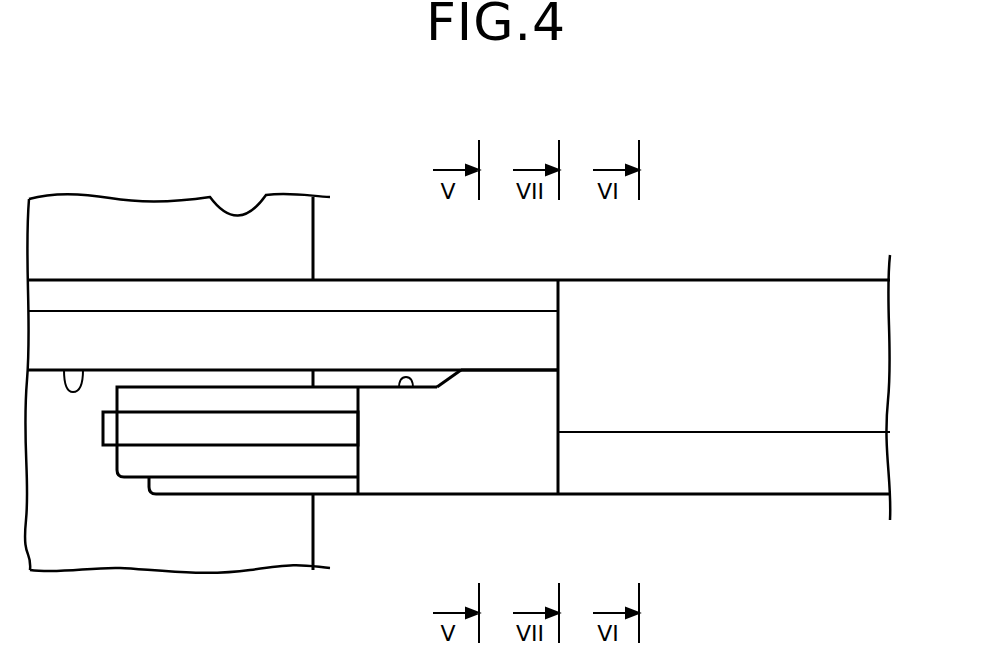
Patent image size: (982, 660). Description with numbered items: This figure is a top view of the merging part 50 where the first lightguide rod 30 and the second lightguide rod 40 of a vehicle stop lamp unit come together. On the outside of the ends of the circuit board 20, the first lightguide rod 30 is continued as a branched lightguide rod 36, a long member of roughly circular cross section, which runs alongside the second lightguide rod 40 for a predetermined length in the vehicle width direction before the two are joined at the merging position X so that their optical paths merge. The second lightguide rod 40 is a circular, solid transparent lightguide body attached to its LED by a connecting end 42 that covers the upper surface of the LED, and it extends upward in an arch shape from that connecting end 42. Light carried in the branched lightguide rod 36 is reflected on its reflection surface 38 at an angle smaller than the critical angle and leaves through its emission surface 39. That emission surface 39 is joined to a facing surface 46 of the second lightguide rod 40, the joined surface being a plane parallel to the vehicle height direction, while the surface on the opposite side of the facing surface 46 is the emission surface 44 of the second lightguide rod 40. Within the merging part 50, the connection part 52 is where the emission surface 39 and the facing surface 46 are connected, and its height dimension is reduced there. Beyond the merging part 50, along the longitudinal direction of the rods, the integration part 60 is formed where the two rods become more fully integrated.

The circuit board 20 is at (63, 540).
The first lightguide rod 30 is at (459, 236).
The branched lightguide rod 36 is at (138, 327).
The reflection surface 38 is at (280, 280).
The emission surface 39 is at (64, 375).
The second lightguide rod 40 is at (293, 455).
The connecting end 42 is at (130, 455).
The emission surface 44 is at (438, 495).
The facing surface 46 is at (399, 388).
The merging part 50 is at (536, 496).
The connection part 52 is at (518, 365).
The integration part 60 is at (752, 402).
The merging position X is at (462, 372).